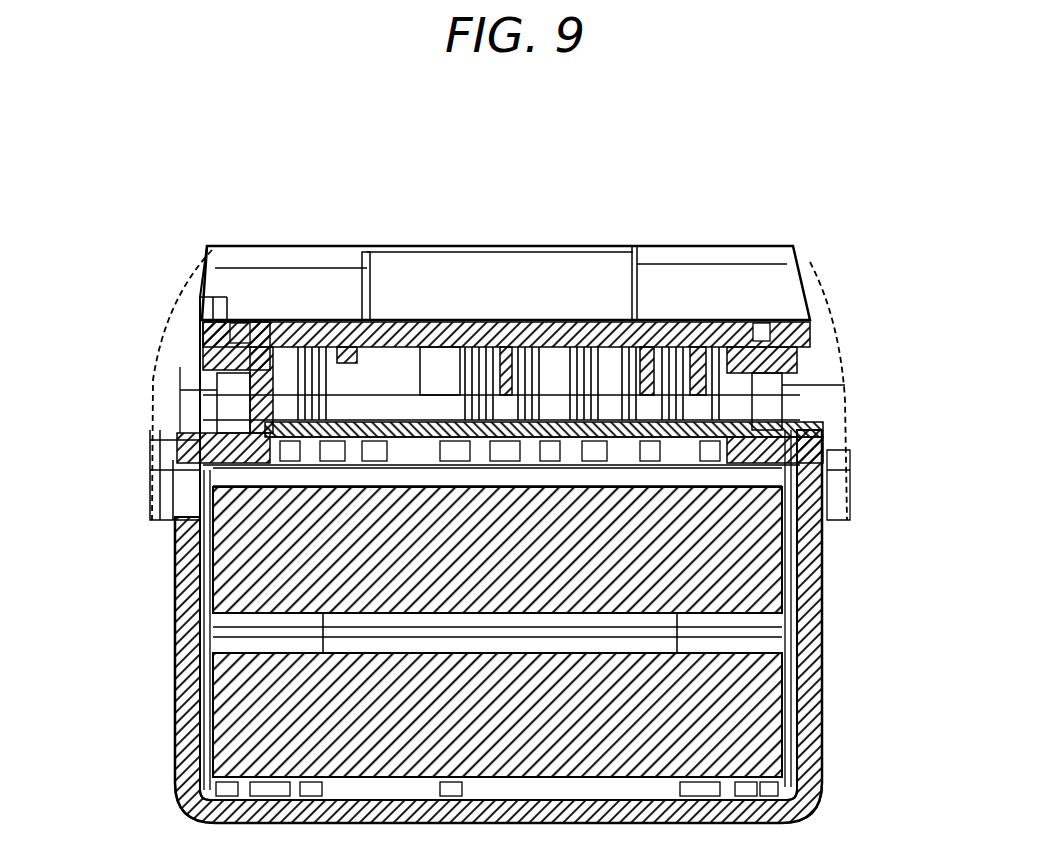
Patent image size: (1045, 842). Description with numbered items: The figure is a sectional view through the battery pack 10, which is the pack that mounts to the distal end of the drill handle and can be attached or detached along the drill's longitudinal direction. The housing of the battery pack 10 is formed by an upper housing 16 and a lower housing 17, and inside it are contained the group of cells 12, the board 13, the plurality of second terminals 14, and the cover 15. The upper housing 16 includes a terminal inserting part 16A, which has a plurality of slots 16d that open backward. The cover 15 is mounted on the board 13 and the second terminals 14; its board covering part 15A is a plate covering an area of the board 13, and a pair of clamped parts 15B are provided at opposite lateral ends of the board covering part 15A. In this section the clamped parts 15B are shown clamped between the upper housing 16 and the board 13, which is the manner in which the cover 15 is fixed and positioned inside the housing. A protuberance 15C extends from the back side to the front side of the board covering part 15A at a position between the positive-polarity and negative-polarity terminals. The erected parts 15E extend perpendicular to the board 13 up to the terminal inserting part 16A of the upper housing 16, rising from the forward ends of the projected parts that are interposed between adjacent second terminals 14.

The battery pack 10 is at (848, 242).
The group of cells 12 is at (818, 618).
The board 13 is at (560, 442).
The second terminals 14 is at (640, 336).
The cover 15 is at (823, 441).
The board covering part 15A is at (177, 486).
The clamped parts 15B is at (255, 418).
The protuberance 15C is at (502, 350).
The erected parts 15E is at (688, 324).
The upper housing 16 is at (793, 342).
The terminal inserting part 16A is at (407, 310).
The slots 16d is at (642, 328).
The lower housing 17 is at (815, 683).